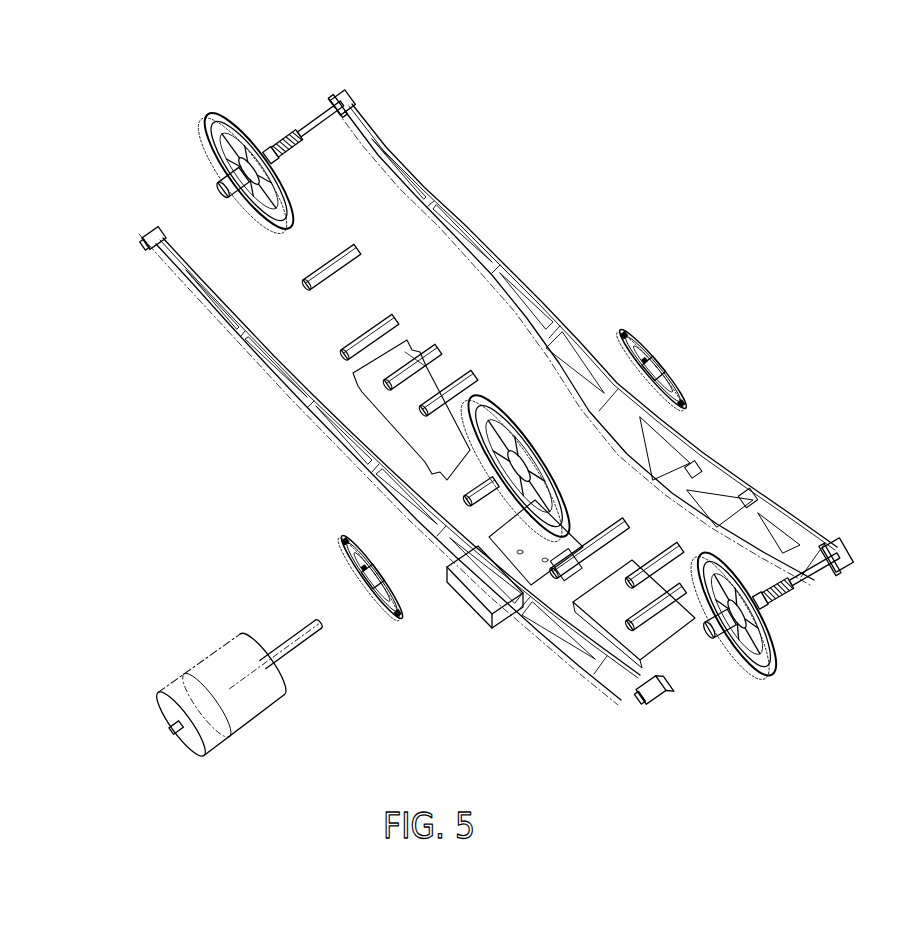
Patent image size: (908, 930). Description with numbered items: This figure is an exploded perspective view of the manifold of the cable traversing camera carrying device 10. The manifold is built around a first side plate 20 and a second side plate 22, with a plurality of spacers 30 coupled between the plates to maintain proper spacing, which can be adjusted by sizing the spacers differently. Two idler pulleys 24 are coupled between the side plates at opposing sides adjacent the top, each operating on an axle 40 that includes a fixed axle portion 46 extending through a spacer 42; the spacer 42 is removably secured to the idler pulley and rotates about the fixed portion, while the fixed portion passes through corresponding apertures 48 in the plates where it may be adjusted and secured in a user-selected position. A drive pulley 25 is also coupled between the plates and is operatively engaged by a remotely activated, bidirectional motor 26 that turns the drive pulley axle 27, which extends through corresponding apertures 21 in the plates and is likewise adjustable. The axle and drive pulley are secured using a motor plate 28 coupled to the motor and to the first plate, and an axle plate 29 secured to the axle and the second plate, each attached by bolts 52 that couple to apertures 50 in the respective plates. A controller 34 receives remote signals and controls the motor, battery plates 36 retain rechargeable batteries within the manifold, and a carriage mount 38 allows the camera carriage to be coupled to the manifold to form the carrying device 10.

The carrying device 10 is at (672, 242).
The first side plate 20 is at (275, 385).
The apertures 21 is at (612, 405).
The second side plate 22 is at (397, 166).
The idler pulleys 24 is at (209, 136).
The drive pulley 25 is at (525, 462).
The motor 26 is at (243, 705).
The drive pulley axle 27 is at (292, 643).
The motor plate 28 is at (400, 603).
The axle plate 29 is at (678, 386).
The spacers 30 is at (338, 258).
The controller 34 is at (500, 617).
The battery plates 36 is at (622, 597).
The carriage mount 38 is at (543, 568).
The axle 40 is at (262, 128).
The spacer 42 is at (227, 187).
The fixed axle portion 46 is at (308, 117).
The apertures 48 is at (660, 700).
The apertures 50 is at (622, 403).
The bolts 52 is at (626, 339).